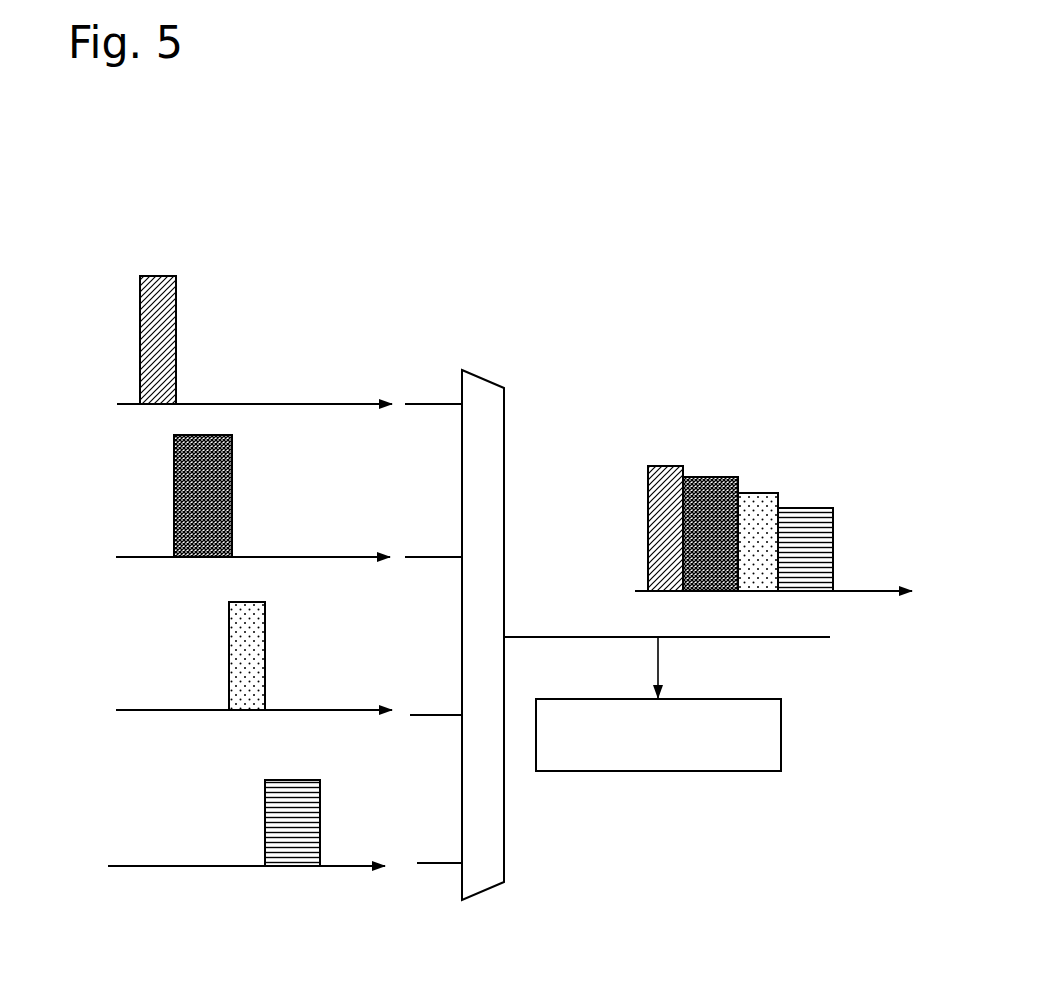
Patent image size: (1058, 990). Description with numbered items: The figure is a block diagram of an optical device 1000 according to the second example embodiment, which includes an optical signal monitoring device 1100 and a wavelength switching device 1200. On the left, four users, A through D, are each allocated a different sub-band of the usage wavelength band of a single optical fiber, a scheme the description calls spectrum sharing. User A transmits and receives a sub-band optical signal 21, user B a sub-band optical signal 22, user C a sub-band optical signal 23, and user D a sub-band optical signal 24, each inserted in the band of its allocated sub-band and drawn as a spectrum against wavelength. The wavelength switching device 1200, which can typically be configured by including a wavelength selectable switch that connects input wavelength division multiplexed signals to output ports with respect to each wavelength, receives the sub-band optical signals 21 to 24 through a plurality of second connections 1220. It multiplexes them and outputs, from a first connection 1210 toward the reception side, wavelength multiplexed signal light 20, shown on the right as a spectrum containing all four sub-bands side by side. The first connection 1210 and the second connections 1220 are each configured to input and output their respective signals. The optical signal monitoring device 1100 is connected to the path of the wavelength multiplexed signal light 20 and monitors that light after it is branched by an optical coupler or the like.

The wavelength multiplexed signal light 20 is at (833, 450).
The sub-band optical signal 21 is at (176, 337).
The sub-band optical signal 22 is at (232, 497).
The sub-band optical signal 23 is at (265, 660).
The sub-band optical signal 24 is at (320, 822).
The optical device 1000 is at (699, 256).
The optical signal monitoring device 1100 is at (735, 772).
The wavelength switching device 1200 is at (482, 381).
The first connection 1210 is at (507, 634).
The second connections 1220 is at (418, 865).